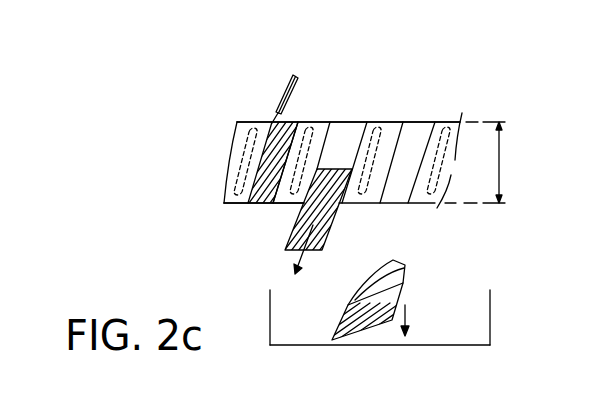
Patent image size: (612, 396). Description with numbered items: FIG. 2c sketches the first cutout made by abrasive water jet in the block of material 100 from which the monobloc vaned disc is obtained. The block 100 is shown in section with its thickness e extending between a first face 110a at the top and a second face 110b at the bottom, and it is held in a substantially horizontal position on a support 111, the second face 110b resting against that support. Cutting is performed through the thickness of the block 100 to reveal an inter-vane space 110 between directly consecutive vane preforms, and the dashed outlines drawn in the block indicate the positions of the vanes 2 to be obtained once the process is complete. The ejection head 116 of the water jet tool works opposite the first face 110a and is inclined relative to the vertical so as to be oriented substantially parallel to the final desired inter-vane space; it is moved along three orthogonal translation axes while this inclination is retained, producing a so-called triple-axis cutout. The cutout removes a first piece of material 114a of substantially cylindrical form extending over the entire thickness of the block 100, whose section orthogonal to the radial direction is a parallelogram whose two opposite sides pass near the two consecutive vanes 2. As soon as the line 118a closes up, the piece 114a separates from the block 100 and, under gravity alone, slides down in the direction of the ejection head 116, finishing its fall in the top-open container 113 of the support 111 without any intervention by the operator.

The block of material 100 is at (226, 145).
The inter-vane space 110 is at (362, 132).
The first face 110a is at (239, 122).
The second face 110b is at (223, 206).
The vane 2 is at (313, 126).
The line 118a is at (301, 124).
The ejection head 116 is at (285, 80).
The first piece of material 114a is at (262, 202).
The container 113 is at (490, 292).
The support 111 is at (470, 345).
The thickness e is at (500, 158).